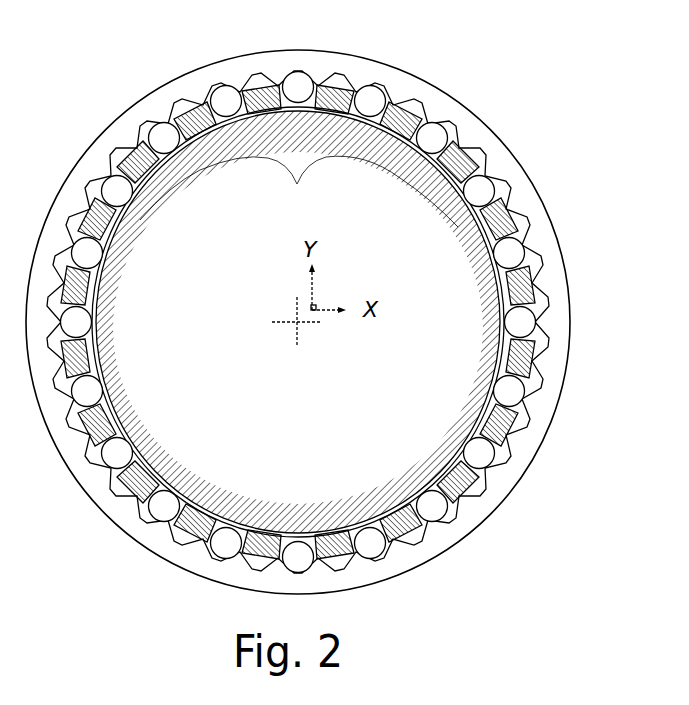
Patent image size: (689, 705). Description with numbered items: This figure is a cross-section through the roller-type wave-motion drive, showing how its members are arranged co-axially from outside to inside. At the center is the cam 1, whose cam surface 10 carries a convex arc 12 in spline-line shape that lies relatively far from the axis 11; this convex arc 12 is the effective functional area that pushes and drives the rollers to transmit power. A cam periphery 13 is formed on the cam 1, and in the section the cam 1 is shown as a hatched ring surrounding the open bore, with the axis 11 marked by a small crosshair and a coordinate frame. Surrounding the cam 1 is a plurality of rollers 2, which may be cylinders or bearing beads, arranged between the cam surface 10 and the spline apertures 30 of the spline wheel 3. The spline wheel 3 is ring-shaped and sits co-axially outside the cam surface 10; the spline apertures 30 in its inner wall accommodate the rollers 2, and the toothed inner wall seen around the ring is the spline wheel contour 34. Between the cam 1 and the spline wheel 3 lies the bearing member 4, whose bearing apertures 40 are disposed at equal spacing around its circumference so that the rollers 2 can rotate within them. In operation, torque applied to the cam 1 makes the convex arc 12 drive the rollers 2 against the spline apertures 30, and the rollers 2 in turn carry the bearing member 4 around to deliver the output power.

The cam 1 is at (231, 407).
The rollers 2 is at (313, 290).
The spline wheel 3 is at (160, 105).
The bearing member 4 is at (313, 290).
The cam surface 10 is at (298, 322).
The cam periphery 13 is at (113, 245).
The axis 11 is at (299, 326).
The convex arc 12 is at (299, 191).
The spline apertures 30 is at (227, 85).
The spline wheel contour 34 is at (490, 165).
The bearing apertures 40 is at (337, 95).